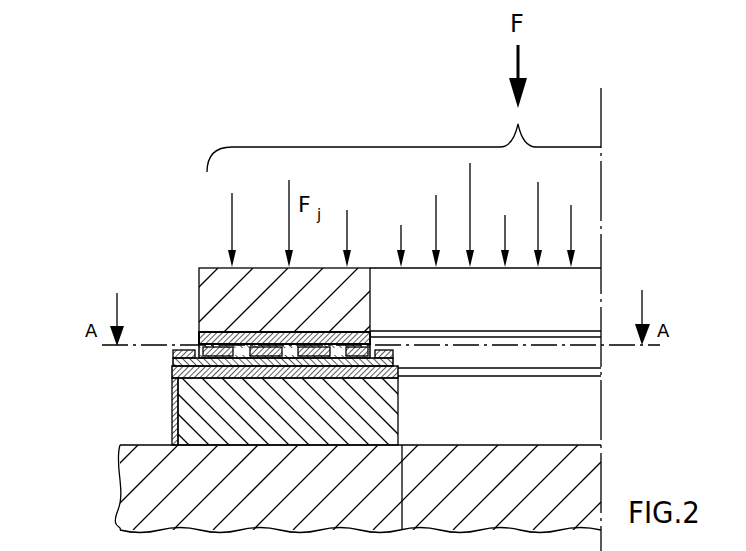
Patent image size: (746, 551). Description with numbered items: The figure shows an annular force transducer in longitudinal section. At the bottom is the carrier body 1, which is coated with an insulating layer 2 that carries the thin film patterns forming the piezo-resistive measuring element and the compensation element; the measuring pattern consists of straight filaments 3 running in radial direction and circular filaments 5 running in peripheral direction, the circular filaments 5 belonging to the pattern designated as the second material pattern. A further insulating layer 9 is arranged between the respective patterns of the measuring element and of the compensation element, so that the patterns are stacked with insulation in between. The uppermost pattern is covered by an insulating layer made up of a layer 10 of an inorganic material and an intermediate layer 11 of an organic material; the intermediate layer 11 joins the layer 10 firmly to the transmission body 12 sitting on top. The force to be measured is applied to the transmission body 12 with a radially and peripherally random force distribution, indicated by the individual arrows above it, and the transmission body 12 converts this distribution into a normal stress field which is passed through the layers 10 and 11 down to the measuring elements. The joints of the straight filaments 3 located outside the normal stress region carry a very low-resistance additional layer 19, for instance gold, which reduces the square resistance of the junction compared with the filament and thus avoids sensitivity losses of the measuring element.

The carrier body 1 is at (210, 414).
The insulating layer 2 is at (172, 372).
The straight filaments 3 is at (177, 363).
The circular filaments 5 is at (372, 340).
The insulating layer 9 is at (400, 376).
The layer of inorganic material 10 is at (372, 336).
The intermediate layer of organic material 11 is at (202, 337).
The transmission body 12 is at (228, 292).
The additional layer 19 is at (193, 352).